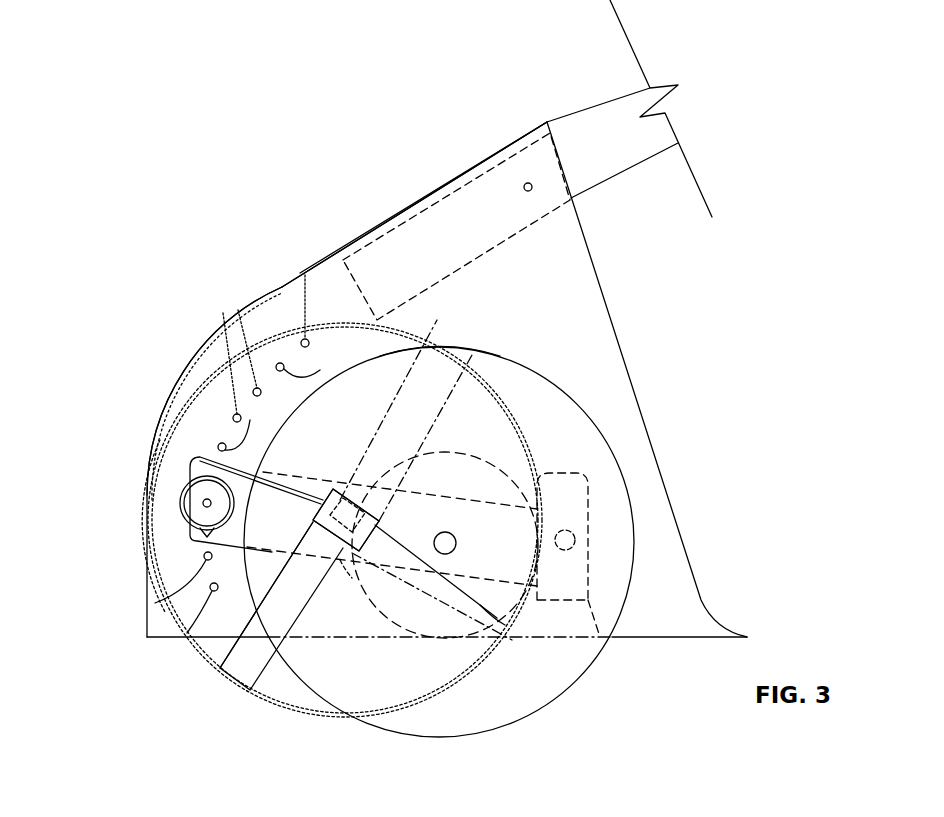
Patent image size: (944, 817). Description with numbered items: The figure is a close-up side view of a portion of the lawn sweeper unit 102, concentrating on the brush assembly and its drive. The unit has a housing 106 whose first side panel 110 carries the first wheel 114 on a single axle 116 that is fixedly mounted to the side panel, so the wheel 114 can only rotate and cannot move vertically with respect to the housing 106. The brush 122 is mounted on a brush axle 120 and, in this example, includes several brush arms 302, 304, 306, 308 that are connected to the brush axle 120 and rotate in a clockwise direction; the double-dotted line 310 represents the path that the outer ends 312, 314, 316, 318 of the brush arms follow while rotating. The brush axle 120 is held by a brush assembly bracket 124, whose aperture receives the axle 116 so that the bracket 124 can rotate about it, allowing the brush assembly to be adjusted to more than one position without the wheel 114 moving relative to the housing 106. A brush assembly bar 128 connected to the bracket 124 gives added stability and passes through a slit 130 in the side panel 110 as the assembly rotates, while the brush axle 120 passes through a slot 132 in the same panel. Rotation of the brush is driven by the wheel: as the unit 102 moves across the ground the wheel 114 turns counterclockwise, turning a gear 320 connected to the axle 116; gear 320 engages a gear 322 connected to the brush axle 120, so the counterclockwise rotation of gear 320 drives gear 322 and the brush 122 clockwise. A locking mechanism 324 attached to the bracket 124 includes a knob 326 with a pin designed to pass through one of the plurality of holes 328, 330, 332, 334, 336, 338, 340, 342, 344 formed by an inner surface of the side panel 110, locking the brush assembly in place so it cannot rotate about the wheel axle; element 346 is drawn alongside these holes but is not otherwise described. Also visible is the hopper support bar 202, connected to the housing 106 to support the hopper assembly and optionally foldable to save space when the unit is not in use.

The lawn sweeper unit 102 is at (277, 163).
The housing 106 is at (267, 297).
The first side panel 110 is at (318, 277).
The first wheel 114 is at (586, 672).
The axle 116 is at (450, 535).
The brush axle 120 is at (362, 478).
The brush 122 is at (227, 657).
The brush assembly bracket 124 is at (165, 520).
The brush assembly bar 128 is at (575, 539).
The slit 130 is at (580, 497).
The slot 132 is at (348, 568).
The hopper support bar 202 is at (587, 150).
The brush arm 302 is at (252, 670).
The brush arm 304 is at (192, 395).
The brush arm 306 is at (440, 345).
The brush arm 308 is at (510, 632).
The double-dotted line 310 is at (155, 433).
The outer end of brush arm 312 is at (227, 693).
The outer end of brush arm 314 is at (165, 412).
The outer end of brush arm 316 is at (447, 347).
The outer end of brush arm 318 is at (507, 650).
The gear 320 is at (438, 452).
The gear 322 is at (336, 488).
The locking mechanism 324 is at (181, 481).
The knob 326 is at (187, 533).
The hole 328 is at (190, 630).
The hole 330 is at (150, 605).
The hole 332 is at (392, 529).
The hole 334 is at (199, 502).
The hole 336 is at (200, 462).
The hole 338 is at (230, 330).
The hole 340 is at (203, 355).
The hole 342 is at (238, 310).
The hole 344 is at (318, 358).
The fastener slot 346 is at (303, 270).